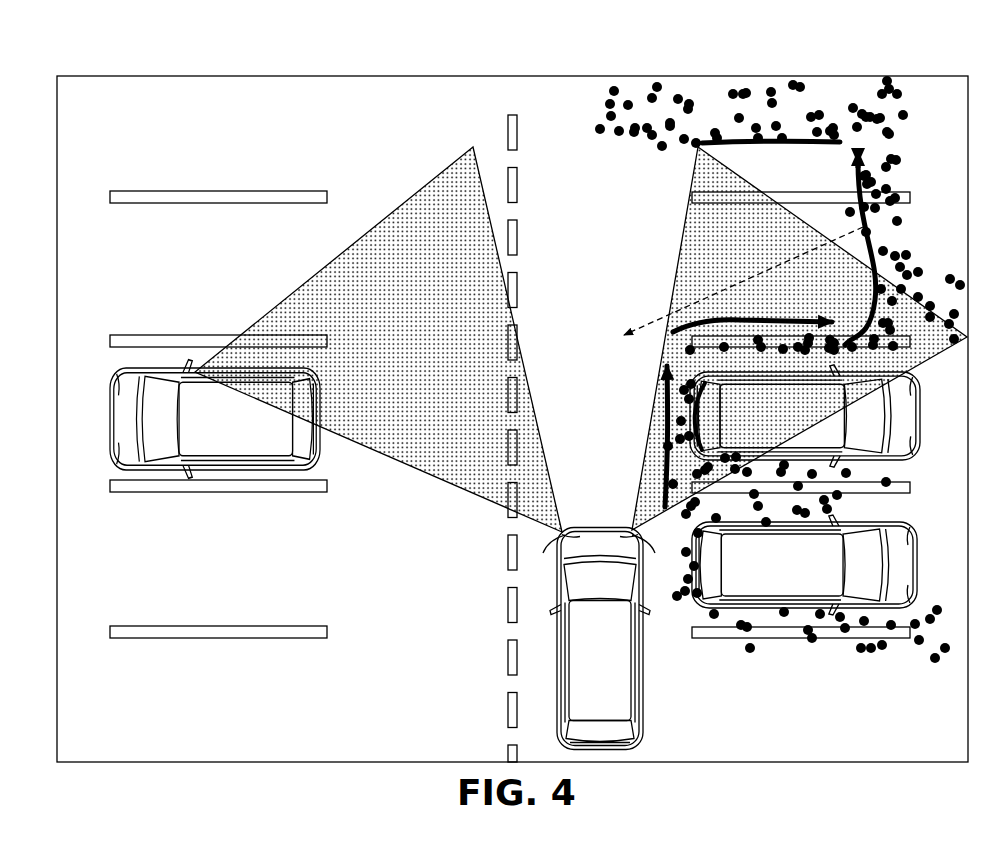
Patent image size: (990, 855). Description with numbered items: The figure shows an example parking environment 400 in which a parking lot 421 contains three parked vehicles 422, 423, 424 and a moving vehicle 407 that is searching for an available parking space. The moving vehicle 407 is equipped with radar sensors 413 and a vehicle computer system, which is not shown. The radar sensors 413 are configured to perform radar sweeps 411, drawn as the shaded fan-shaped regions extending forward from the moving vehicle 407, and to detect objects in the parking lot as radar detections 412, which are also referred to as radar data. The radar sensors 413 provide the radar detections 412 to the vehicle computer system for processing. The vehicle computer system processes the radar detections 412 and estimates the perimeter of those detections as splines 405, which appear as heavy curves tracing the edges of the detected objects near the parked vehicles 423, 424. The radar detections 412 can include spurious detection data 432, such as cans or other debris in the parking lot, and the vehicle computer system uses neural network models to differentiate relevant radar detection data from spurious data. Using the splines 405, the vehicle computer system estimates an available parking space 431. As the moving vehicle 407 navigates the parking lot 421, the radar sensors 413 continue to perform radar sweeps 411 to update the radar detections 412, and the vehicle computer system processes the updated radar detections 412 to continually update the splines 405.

The parking environment 400 is at (557, 62).
The splines 405 is at (745, 152).
The moving vehicle 407 is at (600, 639).
The radar sweeps 411 is at (516, 302).
The radar detections 412 is at (688, 92).
The radar sensors 413 is at (599, 558).
The parking lot 421 is at (512, 419).
The parked vehicle 422 is at (215, 419).
The parked vehicle 423 is at (805, 416).
The parked vehicle 424 is at (804, 565).
The available parking space 431 is at (743, 281).
The spurious detection data 432 is at (820, 240).